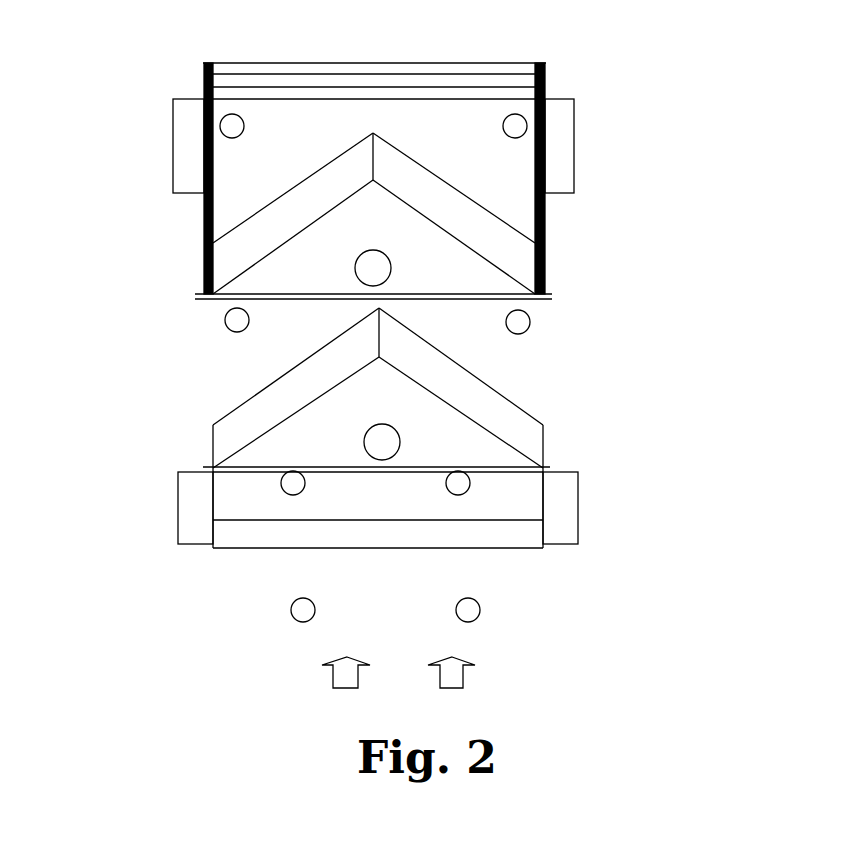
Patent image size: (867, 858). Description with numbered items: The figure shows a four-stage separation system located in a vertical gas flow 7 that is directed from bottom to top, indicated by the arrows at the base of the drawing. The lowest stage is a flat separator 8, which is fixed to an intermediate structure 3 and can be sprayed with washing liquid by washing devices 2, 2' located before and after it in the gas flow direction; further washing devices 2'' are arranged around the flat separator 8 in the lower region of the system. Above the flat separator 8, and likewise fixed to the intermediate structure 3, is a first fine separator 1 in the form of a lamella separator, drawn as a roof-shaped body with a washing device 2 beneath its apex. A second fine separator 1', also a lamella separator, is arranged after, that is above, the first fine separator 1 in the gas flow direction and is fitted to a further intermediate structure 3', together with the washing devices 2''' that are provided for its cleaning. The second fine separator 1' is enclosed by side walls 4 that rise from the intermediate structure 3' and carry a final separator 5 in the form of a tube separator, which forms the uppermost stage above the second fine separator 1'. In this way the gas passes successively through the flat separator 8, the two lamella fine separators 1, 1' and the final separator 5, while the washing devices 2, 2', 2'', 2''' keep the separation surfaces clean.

The first fine separator 1 is at (463, 364).
The second fine separator 1' is at (288, 218).
The washing device 2 is at (405, 441).
The washing device 2' is at (403, 314).
The washing device 2'' is at (509, 546).
The washing devices 2''' is at (393, 162).
The intermediate structure 3 is at (341, 528).
The further intermediate structure 3' is at (472, 146).
The side wall 4 is at (537, 216).
The final separator 5 is at (530, 81).
The vertical gas flow 7 is at (455, 677).
The flat separator 8 is at (512, 537).